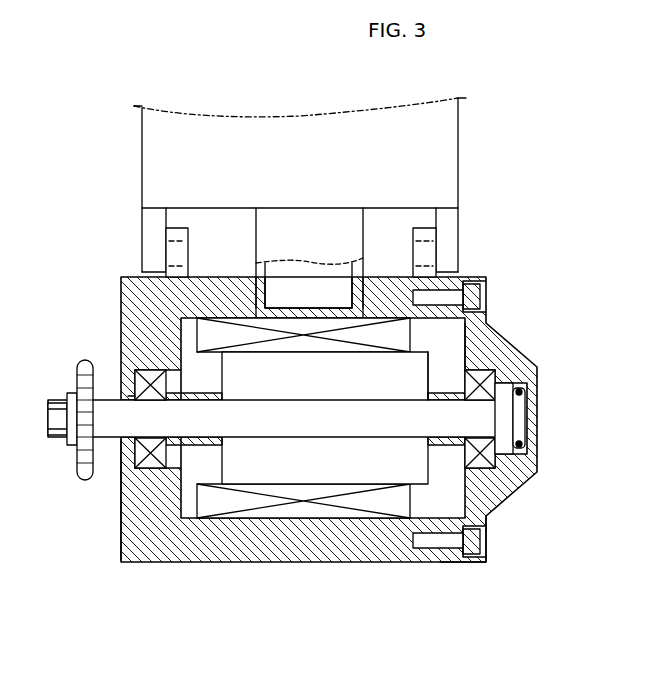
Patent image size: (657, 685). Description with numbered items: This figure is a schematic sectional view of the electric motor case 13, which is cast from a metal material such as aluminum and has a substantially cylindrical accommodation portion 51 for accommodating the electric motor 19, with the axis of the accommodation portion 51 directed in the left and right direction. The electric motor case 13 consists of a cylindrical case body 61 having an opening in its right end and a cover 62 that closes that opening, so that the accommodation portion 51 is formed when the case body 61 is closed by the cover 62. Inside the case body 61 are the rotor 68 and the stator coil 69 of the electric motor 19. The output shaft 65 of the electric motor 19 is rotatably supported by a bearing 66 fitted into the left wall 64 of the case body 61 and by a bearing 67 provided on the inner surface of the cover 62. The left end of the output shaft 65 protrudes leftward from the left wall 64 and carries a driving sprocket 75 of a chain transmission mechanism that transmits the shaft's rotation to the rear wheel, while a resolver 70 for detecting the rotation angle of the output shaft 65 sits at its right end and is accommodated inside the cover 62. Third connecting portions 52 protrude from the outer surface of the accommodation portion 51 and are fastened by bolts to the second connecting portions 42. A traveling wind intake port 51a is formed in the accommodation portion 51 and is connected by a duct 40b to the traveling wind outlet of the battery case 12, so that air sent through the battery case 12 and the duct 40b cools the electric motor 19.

The battery case 12 is at (463, 134).
The electric motor case 13 is at (463, 568).
The electric motor 19 is at (195, 468).
The duct 40b is at (292, 238).
The second connecting portion 42 is at (146, 238).
The accommodation portion 51 is at (446, 348).
The traveling wind intake port 51a is at (335, 282).
The third connecting portion 52 is at (183, 235).
The case body 61 is at (341, 562).
The cover 62 is at (486, 540).
The left wall 64 is at (133, 496).
The output shaft 65 is at (289, 424).
The bearing 66 is at (130, 397).
The bearing 67 is at (506, 388).
The rotor 68 is at (292, 302).
The stator coil 69 is at (312, 325).
The resolver 70 is at (528, 442).
The driving sprocket 75 is at (78, 368).